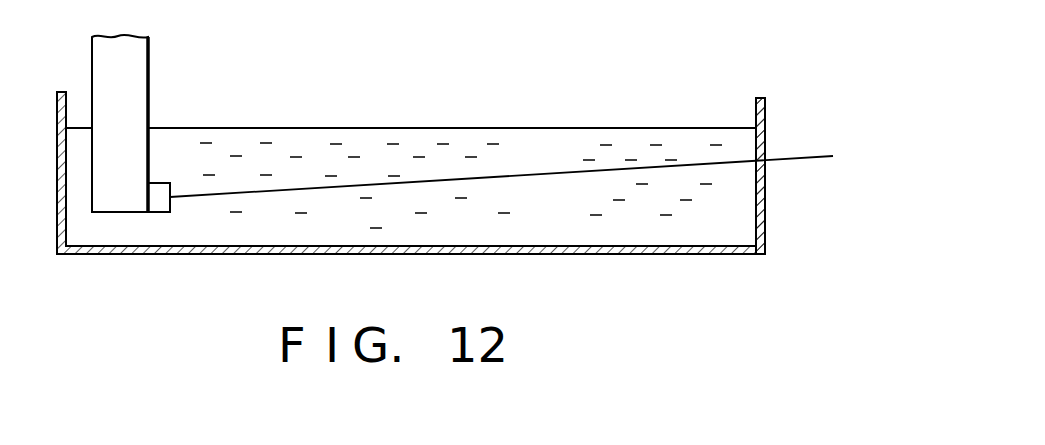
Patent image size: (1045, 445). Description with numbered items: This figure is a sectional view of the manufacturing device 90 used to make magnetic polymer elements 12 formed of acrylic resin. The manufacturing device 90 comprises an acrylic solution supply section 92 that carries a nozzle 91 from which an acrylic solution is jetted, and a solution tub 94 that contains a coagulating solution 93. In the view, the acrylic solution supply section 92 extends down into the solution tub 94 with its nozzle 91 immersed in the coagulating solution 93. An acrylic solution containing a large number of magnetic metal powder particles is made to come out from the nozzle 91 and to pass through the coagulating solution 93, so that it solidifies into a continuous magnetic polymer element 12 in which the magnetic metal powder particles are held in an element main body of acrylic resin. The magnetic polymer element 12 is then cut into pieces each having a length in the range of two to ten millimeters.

The manufacturing device 90 is at (607, 87).
The nozzle 91 is at (152, 183).
The acrylic solution supply section 92 is at (157, 80).
The coagulating solution 93 is at (458, 133).
The solution tub 94 is at (767, 125).
The magnetic polymer element 12 is at (375, 183).